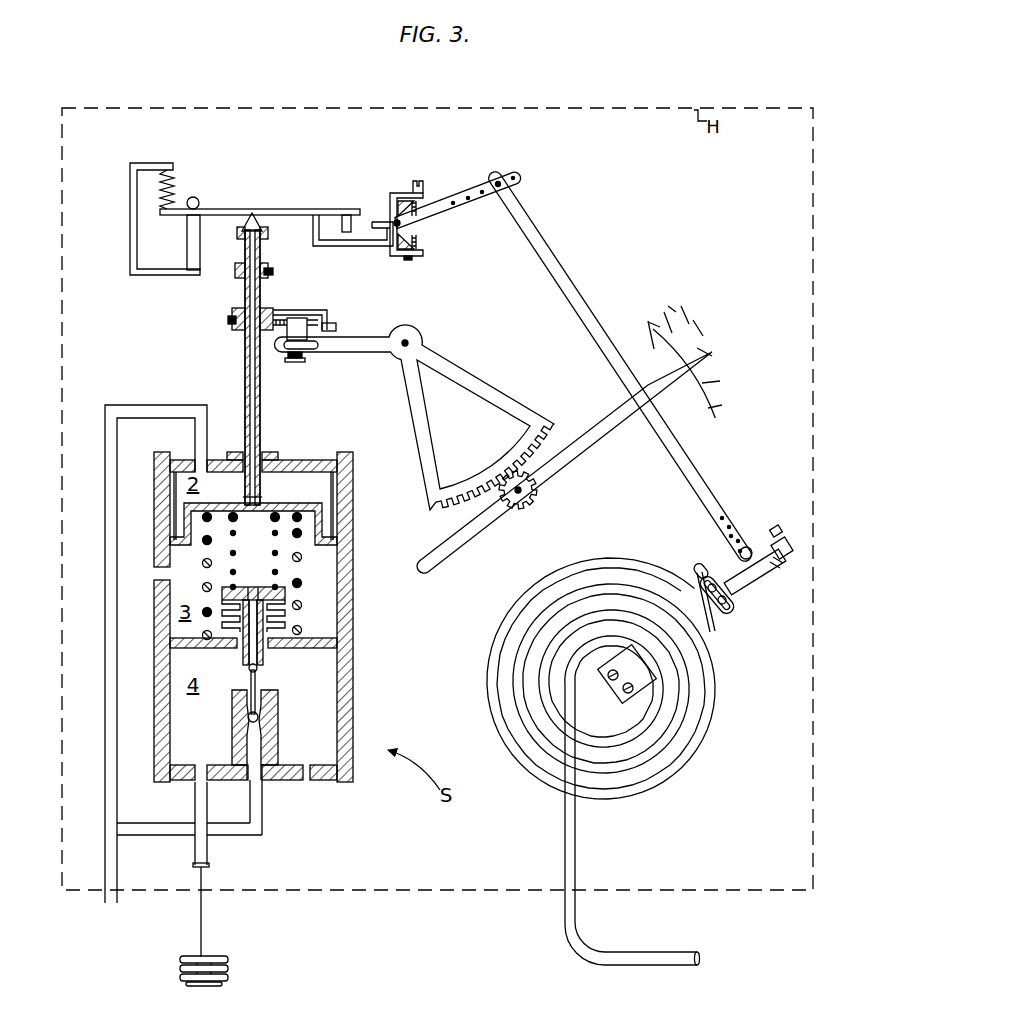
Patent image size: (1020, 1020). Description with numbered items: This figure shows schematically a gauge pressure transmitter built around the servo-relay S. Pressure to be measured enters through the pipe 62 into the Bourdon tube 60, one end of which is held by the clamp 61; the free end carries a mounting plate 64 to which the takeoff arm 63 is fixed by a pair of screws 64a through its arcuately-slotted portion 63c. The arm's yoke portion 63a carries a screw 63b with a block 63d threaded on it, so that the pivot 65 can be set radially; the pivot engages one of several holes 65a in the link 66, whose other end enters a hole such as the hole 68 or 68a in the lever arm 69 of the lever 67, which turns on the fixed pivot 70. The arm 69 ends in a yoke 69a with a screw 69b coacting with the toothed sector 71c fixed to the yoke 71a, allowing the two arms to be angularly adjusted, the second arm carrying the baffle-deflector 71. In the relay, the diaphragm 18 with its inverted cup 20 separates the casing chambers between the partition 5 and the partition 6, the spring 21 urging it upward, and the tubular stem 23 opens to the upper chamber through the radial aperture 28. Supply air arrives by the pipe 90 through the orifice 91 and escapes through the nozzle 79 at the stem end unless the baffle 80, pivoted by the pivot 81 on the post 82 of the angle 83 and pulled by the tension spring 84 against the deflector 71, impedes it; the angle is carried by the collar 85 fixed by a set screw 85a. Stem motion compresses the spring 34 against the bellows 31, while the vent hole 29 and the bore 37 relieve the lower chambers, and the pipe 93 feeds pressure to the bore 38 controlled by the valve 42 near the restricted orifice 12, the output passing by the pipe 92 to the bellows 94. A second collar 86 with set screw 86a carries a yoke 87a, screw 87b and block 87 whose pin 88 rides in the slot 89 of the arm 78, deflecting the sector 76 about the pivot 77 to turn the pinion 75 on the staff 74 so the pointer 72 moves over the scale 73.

The partition 5 is at (305, 456).
The partition 6 is at (320, 646).
The restricted orifice 12 is at (312, 781).
The diaphragm 18 is at (340, 546).
The inverted cup 20 is at (312, 546).
The spring 21 is at (300, 586).
The tubular stem 23 is at (261, 425).
The radial aperture 28 is at (246, 499).
The vent hole 29 is at (158, 581).
The bellows 31 is at (282, 621).
The spring 34 is at (237, 550).
The cylindrical bore 37 is at (253, 590).
The bore 38 is at (263, 746).
The valve 42 is at (259, 679).
The Bourdon tube 60 is at (706, 741).
The clamp 61 is at (610, 683).
The pipe 62 is at (652, 966).
The takeoff arm 63 is at (760, 591).
The yoke portion 63a is at (790, 560).
The screw 63b is at (782, 534).
The arcuately-slotted portion 63c is at (700, 567).
The block 63d is at (777, 567).
The mounting plate 64 is at (716, 629).
The screws 64a is at (735, 601).
The pivot 65 is at (750, 549).
The holes 65a is at (744, 546).
The link 66 is at (592, 313).
The lever 67 is at (450, 238).
The pivot 68 is at (501, 185).
The hole 68a is at (440, 208).
The lever arm 69 is at (440, 206).
The yoke 69a is at (412, 258).
The screw 69b is at (418, 185).
The pivot 70 is at (397, 218).
The baffle-deflector 71 is at (346, 221).
The yoke 71a is at (316, 222).
The toothed sector 71c is at (386, 218).
The pointer 72 is at (717, 393).
The scale 73 is at (688, 331).
The staff 74 is at (522, 495).
The pinion 75 is at (500, 507).
The sector 76 is at (510, 411).
The pivot 77 is at (410, 343).
The arm 78 is at (340, 346).
The nozzle 79 is at (266, 231).
The baffle 80 is at (256, 209).
The pivot 81 is at (199, 202).
The post 82 is at (187, 239).
The angle 83 is at (149, 276).
The tension spring 84 is at (170, 191).
The collar 85 is at (238, 271).
The set screw 85a is at (274, 272).
The collar 86 is at (232, 319).
The set screw 86a is at (232, 326).
The block 87 is at (302, 318).
The yoke 87a is at (328, 312).
The screw 87b is at (337, 329).
The pin 88 is at (296, 358).
The slot 89 is at (292, 363).
The pipe 90 is at (104, 548).
The orifice 91 is at (205, 458).
The pipe 92 is at (197, 846).
The pipe 93 is at (229, 836).
The bellows 94 is at (205, 983).